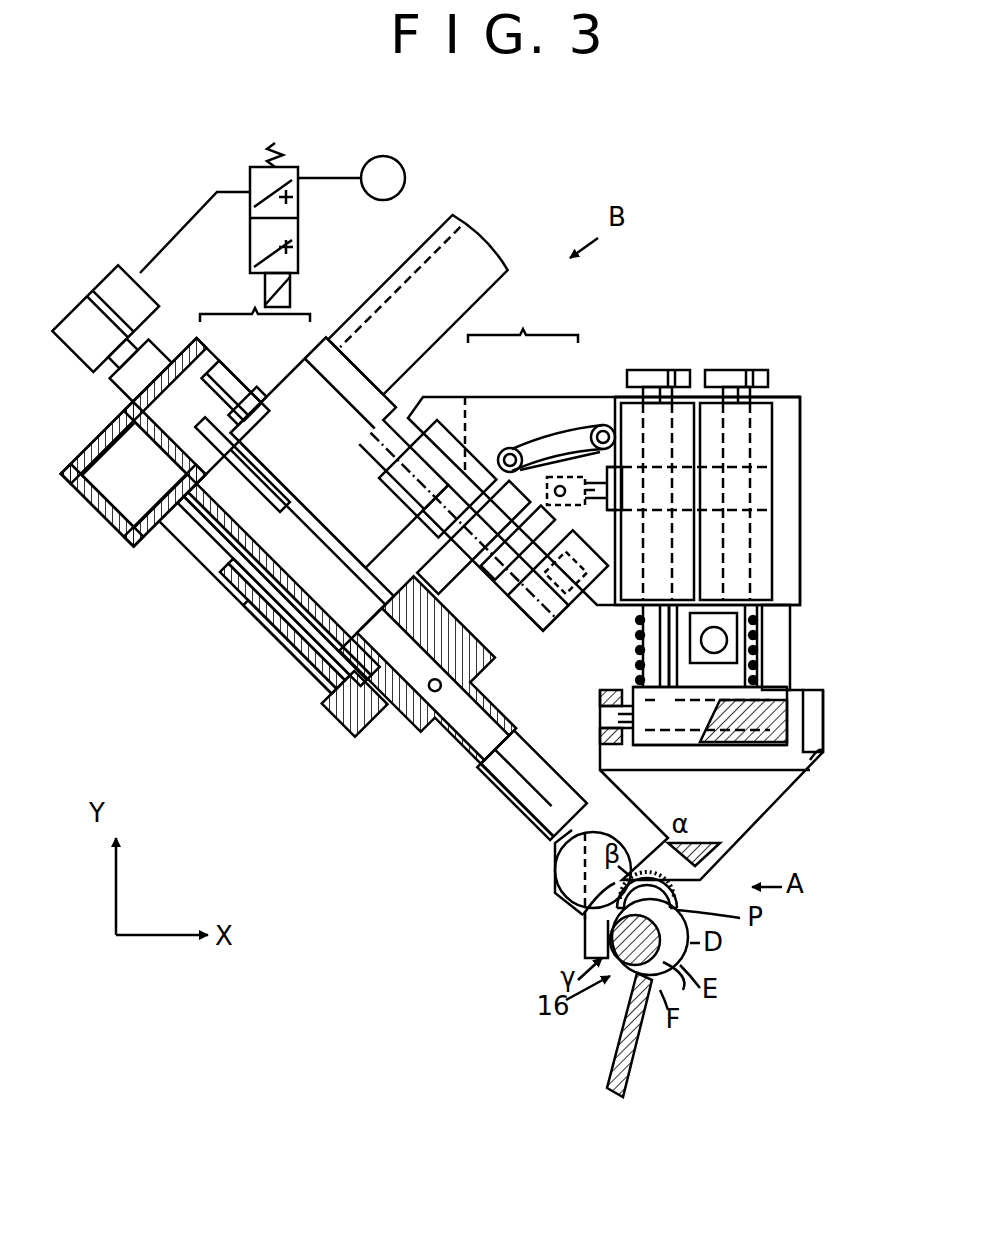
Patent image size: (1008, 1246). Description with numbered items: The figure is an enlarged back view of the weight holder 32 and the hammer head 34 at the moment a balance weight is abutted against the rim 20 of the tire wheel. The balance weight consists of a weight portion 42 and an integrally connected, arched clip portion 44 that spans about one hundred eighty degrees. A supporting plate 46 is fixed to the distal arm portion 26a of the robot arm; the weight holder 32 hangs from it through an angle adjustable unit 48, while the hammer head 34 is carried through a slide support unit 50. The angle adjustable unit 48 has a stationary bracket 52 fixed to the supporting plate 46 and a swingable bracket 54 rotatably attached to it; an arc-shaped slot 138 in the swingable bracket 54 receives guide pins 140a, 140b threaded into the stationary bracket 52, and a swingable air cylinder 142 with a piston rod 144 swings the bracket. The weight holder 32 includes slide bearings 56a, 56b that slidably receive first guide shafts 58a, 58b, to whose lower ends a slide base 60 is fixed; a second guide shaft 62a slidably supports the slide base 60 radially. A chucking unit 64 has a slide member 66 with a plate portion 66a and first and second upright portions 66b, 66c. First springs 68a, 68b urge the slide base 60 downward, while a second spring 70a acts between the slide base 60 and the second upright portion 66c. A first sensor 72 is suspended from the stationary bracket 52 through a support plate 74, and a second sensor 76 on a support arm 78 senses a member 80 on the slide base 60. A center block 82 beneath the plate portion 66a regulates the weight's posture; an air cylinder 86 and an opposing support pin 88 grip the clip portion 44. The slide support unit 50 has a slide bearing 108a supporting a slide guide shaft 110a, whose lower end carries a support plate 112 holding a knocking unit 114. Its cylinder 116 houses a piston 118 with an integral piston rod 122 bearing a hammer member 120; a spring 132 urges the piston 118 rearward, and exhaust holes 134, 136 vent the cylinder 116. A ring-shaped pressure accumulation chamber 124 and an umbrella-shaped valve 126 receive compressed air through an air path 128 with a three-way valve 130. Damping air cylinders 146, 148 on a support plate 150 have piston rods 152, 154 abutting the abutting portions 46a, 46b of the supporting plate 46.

The rim 20 is at (625, 1082).
The distal arm portion 26a is at (496, 258).
The weight holder 32 is at (812, 510).
The hammer head 34 is at (246, 690).
The weight portion 42 is at (628, 963).
The clip portion 44 is at (672, 893).
The supporting plate 46 is at (350, 395).
The abutting portion 46a is at (566, 592).
The abutting portion 46b is at (376, 462).
The angle adjustable unit 48 is at (523, 322).
The slide support unit 50 is at (255, 301).
The stationary bracket 52 is at (450, 396).
The swingable bracket 54 is at (560, 425).
The slide bearing 56a is at (690, 425).
The slide bearing 56b is at (762, 457).
The first guide shaft 58a is at (682, 362).
The first guide shaft 58b is at (758, 362).
The slide base 60 is at (660, 746).
The second guide shaft 62a is at (806, 695).
The chucking unit 64 is at (738, 956).
The slide member 66 is at (825, 758).
The plate portion 66a is at (745, 746).
The first upright portion 66b is at (602, 712).
The second upright portion 66c is at (822, 705).
The first spring 68a is at (636, 637).
The first spring 68b is at (760, 625).
The second spring 70a is at (812, 762).
The first sensor 72 is at (790, 690).
The support plate 74 is at (790, 650).
The second sensor 76 is at (740, 640).
The support arm 78 is at (740, 606).
The member to be sensed 80 is at (655, 655).
The center block 82 is at (762, 815).
The air cylinder 86 is at (560, 885).
The support pin 88 is at (582, 926).
The slide bearing 108a is at (298, 372).
The slide guide shaft 110a is at (237, 372).
The support plate 112 is at (334, 725).
The knocking unit 114 is at (292, 642).
The cylinder 116 is at (199, 530).
The piston 118 is at (265, 462).
The hammer member 120 is at (518, 806).
The piston rod 122 is at (250, 586).
The pressure accumulation chamber 124 is at (112, 520).
The umbrella-shaped valve 126 is at (124, 500).
The air path 128 is at (178, 232).
The three-way valve 130 is at (248, 208).
The spring 132 is at (272, 613).
The exhaust hole 134 is at (320, 668).
The exhaust hole 136 is at (220, 556).
The arc-shaped slot 138 is at (545, 437).
The guide pin 140a is at (508, 448).
The guide pin 140b is at (603, 425).
The swingable air cylinder 142 is at (634, 368).
The piston rod 144 is at (584, 478).
The air cylinder 146 is at (527, 500).
The air cylinder 148 is at (470, 606).
The support plate 150 is at (476, 542).
The piston rod 152 is at (575, 558).
The piston rod 154 is at (436, 526).